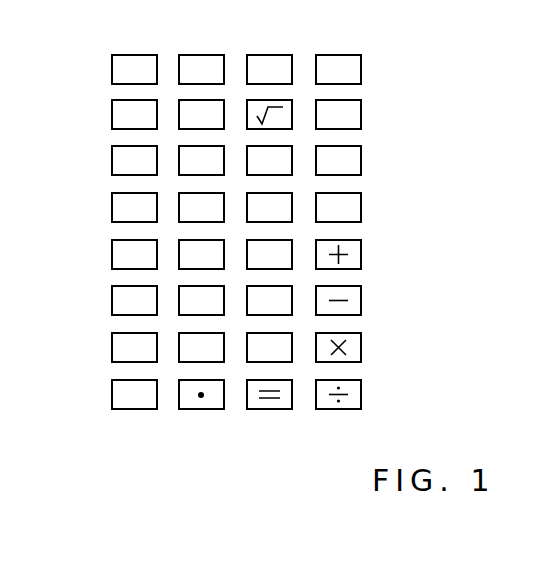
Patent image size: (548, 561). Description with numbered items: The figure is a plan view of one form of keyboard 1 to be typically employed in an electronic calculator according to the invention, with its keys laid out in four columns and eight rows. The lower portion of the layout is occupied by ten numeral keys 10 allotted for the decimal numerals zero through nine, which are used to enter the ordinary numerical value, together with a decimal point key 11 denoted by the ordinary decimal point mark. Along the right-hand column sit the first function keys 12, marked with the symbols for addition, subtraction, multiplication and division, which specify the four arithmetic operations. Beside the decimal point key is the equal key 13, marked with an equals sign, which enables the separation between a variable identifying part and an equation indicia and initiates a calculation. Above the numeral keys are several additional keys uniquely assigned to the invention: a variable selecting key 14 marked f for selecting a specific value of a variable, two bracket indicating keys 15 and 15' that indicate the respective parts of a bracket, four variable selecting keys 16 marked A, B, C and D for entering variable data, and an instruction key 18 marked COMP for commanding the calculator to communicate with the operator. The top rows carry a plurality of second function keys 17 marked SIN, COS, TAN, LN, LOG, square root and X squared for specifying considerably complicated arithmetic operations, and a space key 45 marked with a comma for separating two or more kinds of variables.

The keyboard 1 is at (337, 41).
The second function keys 17 is at (114, 69).
The space key 45 is at (357, 77).
The variable selecting keys 16 is at (114, 158).
The bracket indicating key 15' is at (133, 186).
The bracket indicating key 15 is at (332, 195).
The variable selecting key 14 is at (113, 210).
The instruction key 18 is at (356, 220).
The numeral keys 10 is at (114, 259).
The first function keys 12 is at (350, 265).
The decimal point key 11 is at (201, 410).
The equal key 13 is at (277, 410).